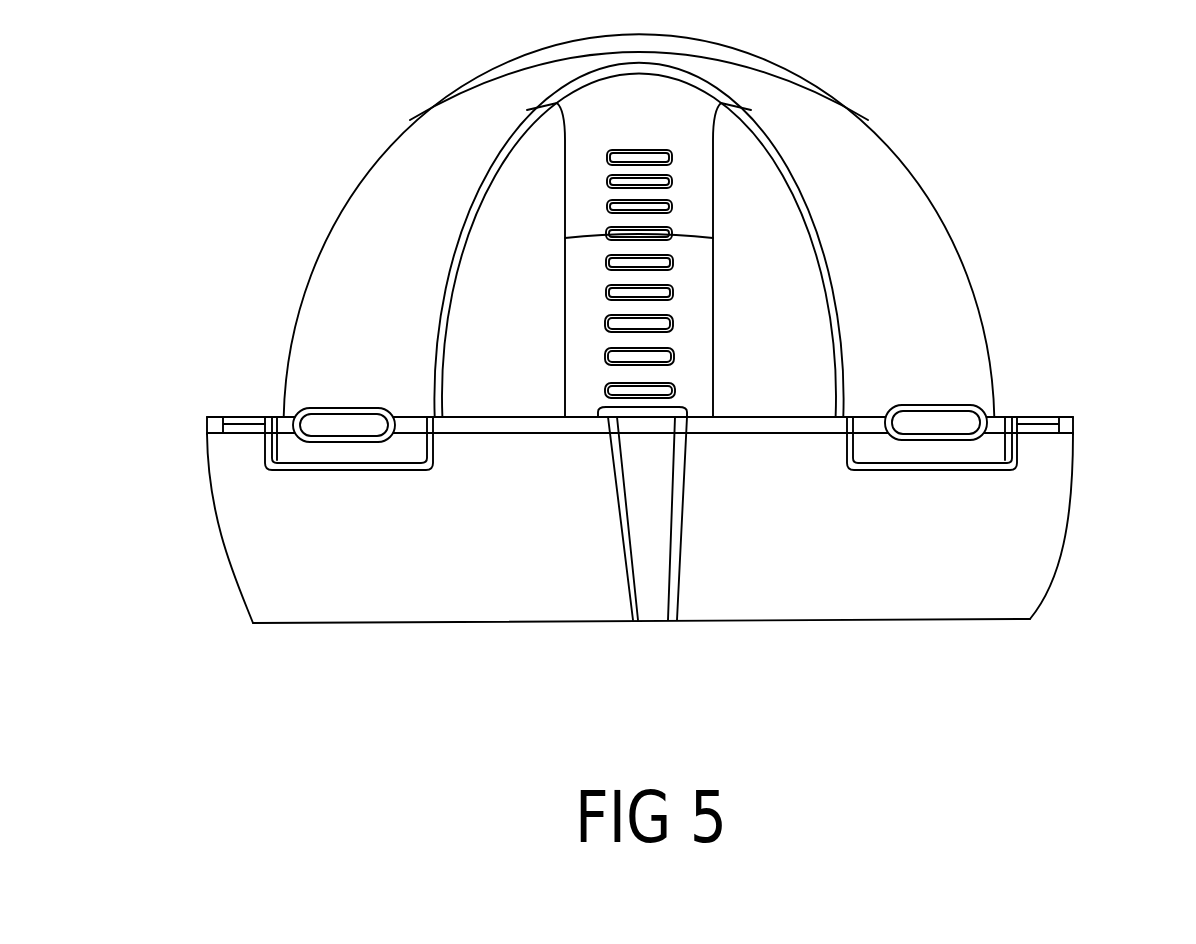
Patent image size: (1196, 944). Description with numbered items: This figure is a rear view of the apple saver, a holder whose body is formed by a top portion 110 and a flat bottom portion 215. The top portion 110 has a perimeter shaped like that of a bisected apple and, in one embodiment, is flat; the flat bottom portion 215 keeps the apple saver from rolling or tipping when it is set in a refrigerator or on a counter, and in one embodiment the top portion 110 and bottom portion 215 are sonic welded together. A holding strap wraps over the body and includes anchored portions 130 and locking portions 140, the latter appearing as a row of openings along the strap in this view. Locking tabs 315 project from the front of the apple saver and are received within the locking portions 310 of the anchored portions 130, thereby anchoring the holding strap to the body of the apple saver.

The top portion 110 is at (1037, 413).
The anchored portions 130 is at (338, 258).
The locking portions 140 is at (672, 292).
The flat bottom portion 215 is at (987, 617).
The locking portion 310 is at (318, 410).
The locking tabs 315 is at (338, 427).